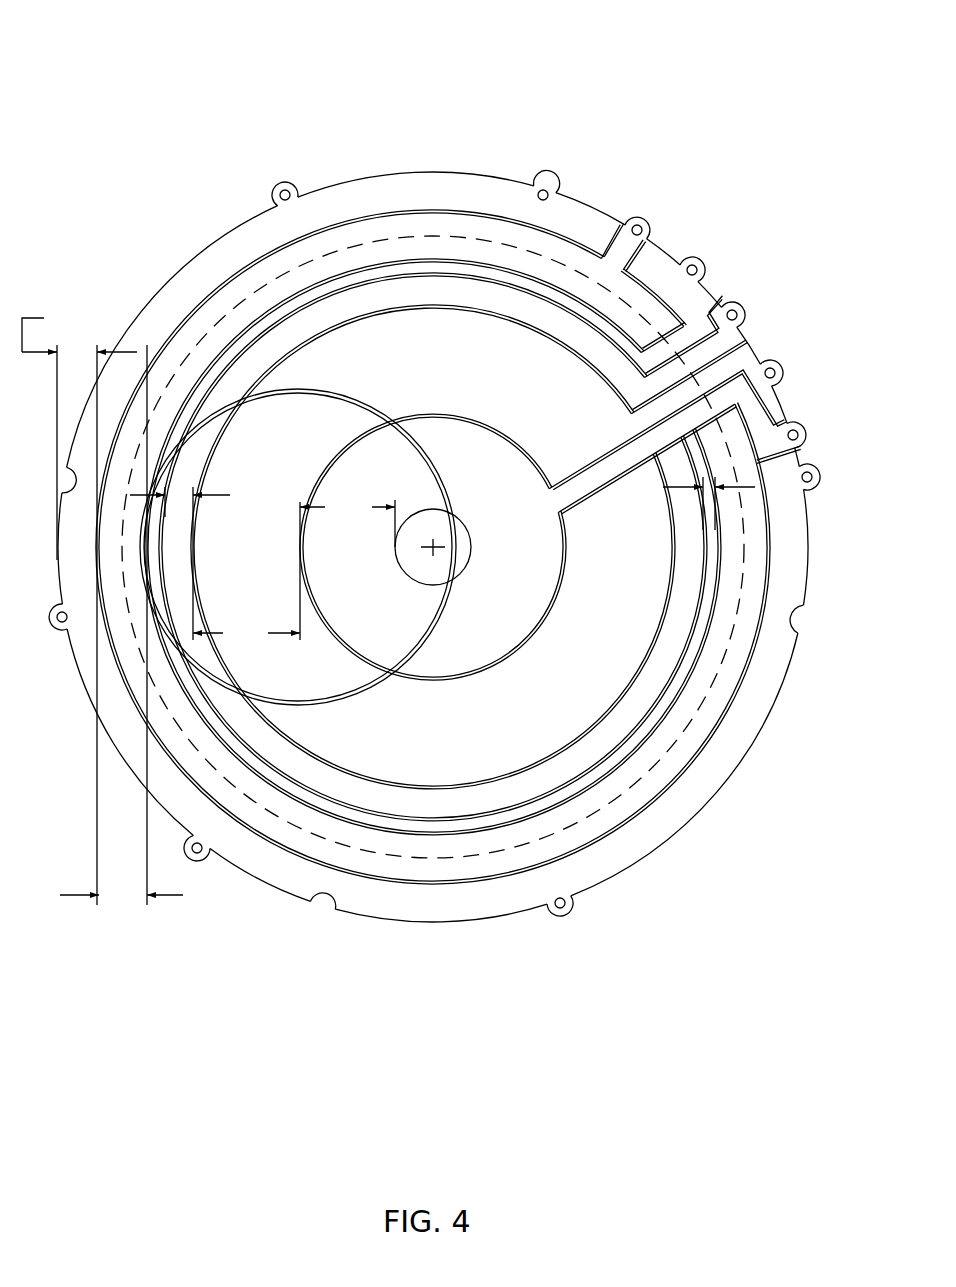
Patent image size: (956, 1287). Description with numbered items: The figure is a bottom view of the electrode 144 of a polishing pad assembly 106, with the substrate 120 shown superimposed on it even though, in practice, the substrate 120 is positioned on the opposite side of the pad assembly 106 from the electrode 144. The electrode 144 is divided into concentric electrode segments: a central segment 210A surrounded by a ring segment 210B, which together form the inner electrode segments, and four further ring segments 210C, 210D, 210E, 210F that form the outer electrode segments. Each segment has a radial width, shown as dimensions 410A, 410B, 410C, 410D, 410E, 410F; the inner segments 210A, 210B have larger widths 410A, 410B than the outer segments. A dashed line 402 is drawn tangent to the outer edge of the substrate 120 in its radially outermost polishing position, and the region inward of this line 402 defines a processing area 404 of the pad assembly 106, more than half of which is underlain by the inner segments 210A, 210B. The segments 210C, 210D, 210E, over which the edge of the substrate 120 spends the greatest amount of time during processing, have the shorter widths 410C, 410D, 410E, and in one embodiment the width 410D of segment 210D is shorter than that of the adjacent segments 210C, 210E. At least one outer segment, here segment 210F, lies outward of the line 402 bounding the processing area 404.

The pad assembly 106 is at (478, 603).
The electrode 144 is at (346, 178).
The dashed line 402 is at (188, 352).
The processing area 404 is at (303, 321).
The substrate 120 is at (357, 396).
The inner electrode segment 210A is at (526, 603).
The inner electrode segment 210B is at (569, 715).
The outer electrode segment 210C is at (478, 522).
The outer electrode segment 210D is at (514, 816).
The outer electrode segment 210E is at (600, 822).
The outer electrode segment 210F is at (705, 793).
The width 410A is at (347, 523).
The width 410B is at (246, 573).
The width 410C is at (203, 563).
The width 410D is at (687, 503).
The width 410E is at (145, 625).
The width 410F is at (79, 607).